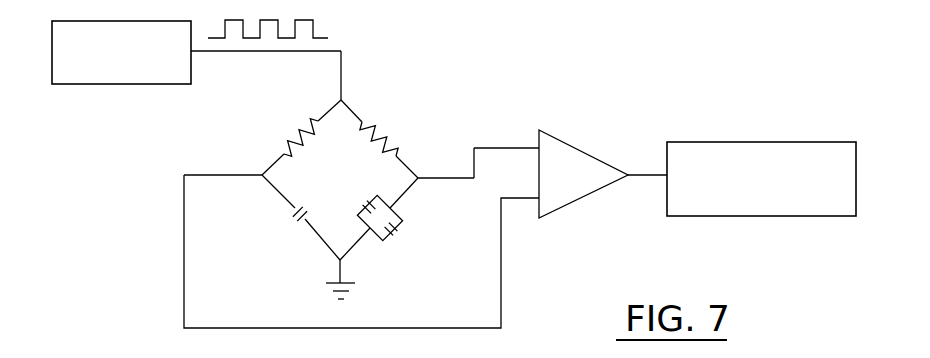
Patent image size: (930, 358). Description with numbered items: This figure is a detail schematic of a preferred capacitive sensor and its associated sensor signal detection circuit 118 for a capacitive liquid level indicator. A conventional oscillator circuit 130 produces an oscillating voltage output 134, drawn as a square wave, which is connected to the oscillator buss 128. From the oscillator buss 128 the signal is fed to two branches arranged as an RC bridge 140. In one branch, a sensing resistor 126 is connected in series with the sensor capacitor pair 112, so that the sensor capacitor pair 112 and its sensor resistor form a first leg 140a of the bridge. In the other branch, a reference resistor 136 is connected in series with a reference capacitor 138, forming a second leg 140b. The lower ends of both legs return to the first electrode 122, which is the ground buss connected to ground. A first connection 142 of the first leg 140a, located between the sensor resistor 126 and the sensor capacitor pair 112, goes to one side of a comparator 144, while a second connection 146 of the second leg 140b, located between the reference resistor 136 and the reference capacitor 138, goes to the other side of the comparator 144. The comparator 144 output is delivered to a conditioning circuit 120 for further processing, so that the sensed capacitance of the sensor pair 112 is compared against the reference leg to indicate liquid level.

The capacitive sensor pair 112 is at (407, 228).
The bridge circuit 118 is at (490, 60).
The conditioning circuit 120 is at (747, 134).
The first electrode 122 is at (338, 262).
The sensing resistor 126 is at (390, 130).
The oscillator buss 128 is at (341, 100).
The oscillator circuit 130 is at (130, 85).
The oscillating voltage output 134 is at (320, 14).
The reference resistor 136 is at (292, 139).
The reference capacitor 138 is at (290, 213).
The RC bridge 140 is at (425, 138).
The first leg 140a is at (422, 184).
The second leg 140b is at (262, 160).
The first connection 142 is at (502, 148).
The comparator 144 is at (578, 150).
The second connection 146 is at (184, 208).